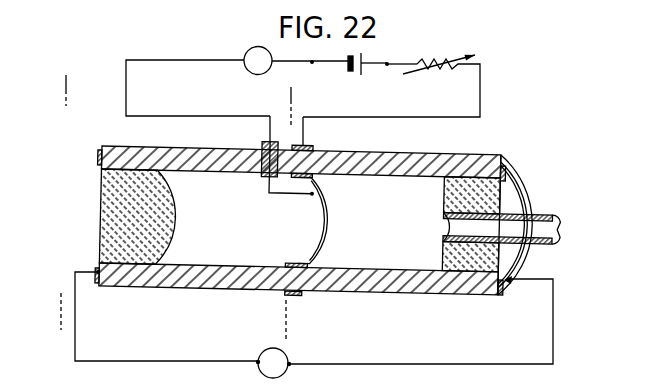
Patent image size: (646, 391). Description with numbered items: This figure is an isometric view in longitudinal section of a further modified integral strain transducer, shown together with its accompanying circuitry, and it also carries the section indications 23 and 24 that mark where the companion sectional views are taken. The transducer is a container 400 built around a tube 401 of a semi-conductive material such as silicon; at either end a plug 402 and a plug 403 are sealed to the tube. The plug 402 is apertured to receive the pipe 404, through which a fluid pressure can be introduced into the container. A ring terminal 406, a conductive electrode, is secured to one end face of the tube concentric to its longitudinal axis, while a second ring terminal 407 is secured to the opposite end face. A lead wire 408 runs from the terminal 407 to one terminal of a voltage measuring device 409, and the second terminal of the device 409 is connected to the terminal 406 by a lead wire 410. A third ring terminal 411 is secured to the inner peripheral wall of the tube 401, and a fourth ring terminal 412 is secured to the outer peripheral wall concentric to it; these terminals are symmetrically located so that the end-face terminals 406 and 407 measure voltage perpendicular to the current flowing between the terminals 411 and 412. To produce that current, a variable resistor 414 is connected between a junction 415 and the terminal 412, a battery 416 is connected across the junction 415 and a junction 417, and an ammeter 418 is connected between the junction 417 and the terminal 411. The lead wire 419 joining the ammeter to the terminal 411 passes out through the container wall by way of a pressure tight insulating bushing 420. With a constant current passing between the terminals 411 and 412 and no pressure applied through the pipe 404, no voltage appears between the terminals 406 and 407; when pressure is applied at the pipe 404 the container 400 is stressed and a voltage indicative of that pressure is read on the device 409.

The container 400 is at (496, 150).
The tube 401 is at (186, 283).
The plug 402 is at (444, 192).
The plug 403 is at (100, 230).
The pipe 404 is at (547, 229).
The ring terminal 406 is at (98, 157).
The second ring terminal 407 is at (516, 186).
The lead wire 408 is at (422, 366).
The voltage measuring device 409 is at (288, 356).
The lead wire 410 is at (128, 361).
The third ring terminal 411 is at (319, 236).
The fourth ring terminal 412 is at (303, 145).
The variable resistor 414 is at (445, 70).
The junction 415 is at (387, 64).
The battery 416 is at (351, 72).
The junction 417 is at (312, 64).
The ammeter 418 is at (250, 48).
The lead wire 419 is at (127, 94).
The insulating bushing 420 is at (262, 179).
The section line 23- 23 is at (284, 97).
The section line 24- 24 is at (60, 80).